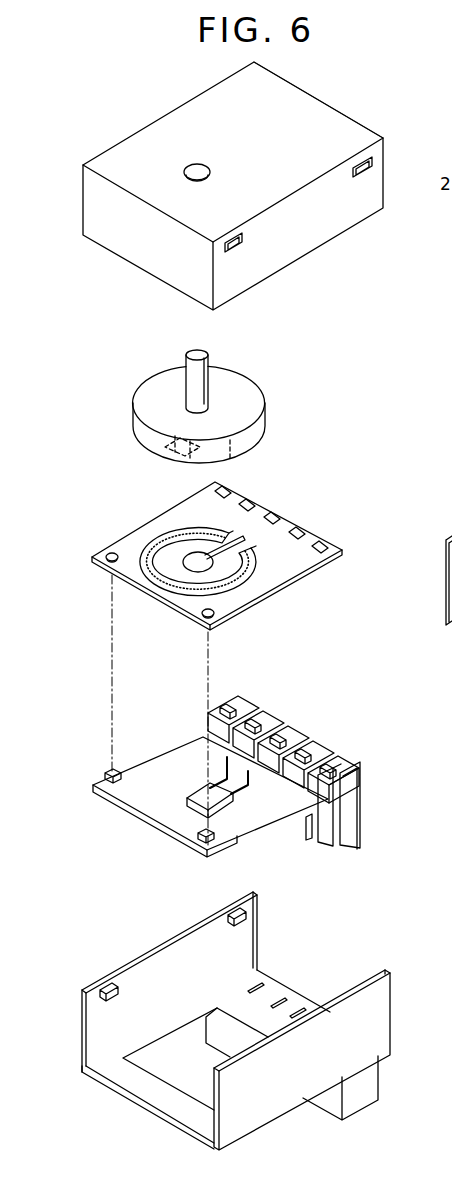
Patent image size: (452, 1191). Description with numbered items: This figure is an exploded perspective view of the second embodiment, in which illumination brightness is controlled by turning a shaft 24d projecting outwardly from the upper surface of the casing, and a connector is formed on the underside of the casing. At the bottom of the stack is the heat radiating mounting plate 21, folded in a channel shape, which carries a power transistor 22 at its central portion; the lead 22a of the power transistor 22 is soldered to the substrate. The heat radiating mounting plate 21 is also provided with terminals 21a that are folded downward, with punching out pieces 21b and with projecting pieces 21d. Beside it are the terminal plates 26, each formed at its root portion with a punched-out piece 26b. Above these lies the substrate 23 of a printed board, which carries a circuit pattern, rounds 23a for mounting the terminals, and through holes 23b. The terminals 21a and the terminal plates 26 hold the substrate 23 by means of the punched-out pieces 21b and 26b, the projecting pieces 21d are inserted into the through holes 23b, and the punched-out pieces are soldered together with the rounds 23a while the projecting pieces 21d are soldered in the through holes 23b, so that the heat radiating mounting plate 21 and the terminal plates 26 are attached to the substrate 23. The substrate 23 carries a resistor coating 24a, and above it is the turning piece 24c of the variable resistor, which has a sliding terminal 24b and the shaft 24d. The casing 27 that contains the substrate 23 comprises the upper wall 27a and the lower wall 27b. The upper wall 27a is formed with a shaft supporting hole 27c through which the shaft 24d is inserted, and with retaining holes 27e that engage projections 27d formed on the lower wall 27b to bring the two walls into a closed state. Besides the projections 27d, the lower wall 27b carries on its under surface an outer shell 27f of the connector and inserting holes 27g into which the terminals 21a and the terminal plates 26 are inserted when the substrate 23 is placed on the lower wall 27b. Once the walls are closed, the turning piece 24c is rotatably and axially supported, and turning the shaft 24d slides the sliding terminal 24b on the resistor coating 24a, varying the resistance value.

The heat radiating mounting plate 21 is at (254, 822).
The terminals 21a is at (355, 800).
The punching out pieces 21b is at (329, 769).
The projecting pieces 21d is at (112, 774).
The power transistor 22 is at (203, 792).
The lead 22a is at (245, 787).
The substrate 23 is at (158, 525).
The rounds 23a is at (271, 515).
The through holes 23b is at (110, 552).
The resistor coating 24a is at (185, 532).
The sliding terminal 24b is at (172, 438).
The turning piece 24c is at (243, 403).
The shaft 24d is at (200, 380).
The terminal plates 26 is at (324, 836).
The punched-out pieces 26b is at (309, 746).
The casing 27 is at (128, 263).
The upper wall 27a is at (310, 113).
The lower wall 27b is at (231, 1003).
The shaft supporting hole 27c is at (190, 163).
The projections 27d is at (243, 912).
The retaining holes 27e is at (243, 244).
The outer shell of connector 27f is at (332, 1098).
The inserting holes 27g is at (278, 998).